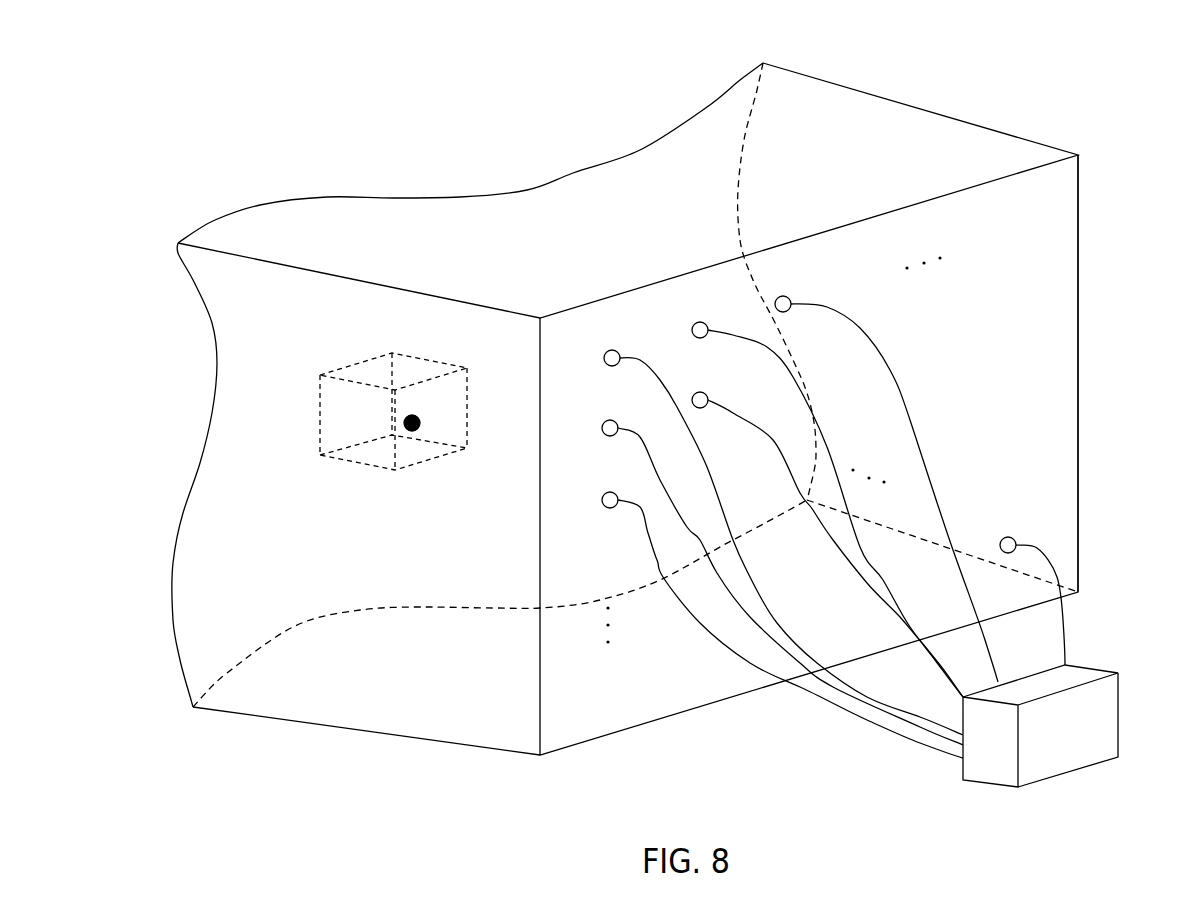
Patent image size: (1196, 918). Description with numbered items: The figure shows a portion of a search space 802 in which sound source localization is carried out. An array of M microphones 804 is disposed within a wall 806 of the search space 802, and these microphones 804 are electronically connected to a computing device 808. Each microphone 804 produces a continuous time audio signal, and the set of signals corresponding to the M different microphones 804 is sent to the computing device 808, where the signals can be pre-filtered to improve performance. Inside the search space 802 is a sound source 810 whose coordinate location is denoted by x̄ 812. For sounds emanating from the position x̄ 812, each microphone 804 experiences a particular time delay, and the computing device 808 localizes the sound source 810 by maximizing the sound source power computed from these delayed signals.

The search space 802 is at (940, 113).
The microphones 804 is at (663, 313).
The wall 806 is at (1068, 282).
The computing device 808 is at (1086, 747).
The sound source 810 is at (420, 416).
The coordinate location 812 is at (435, 497).